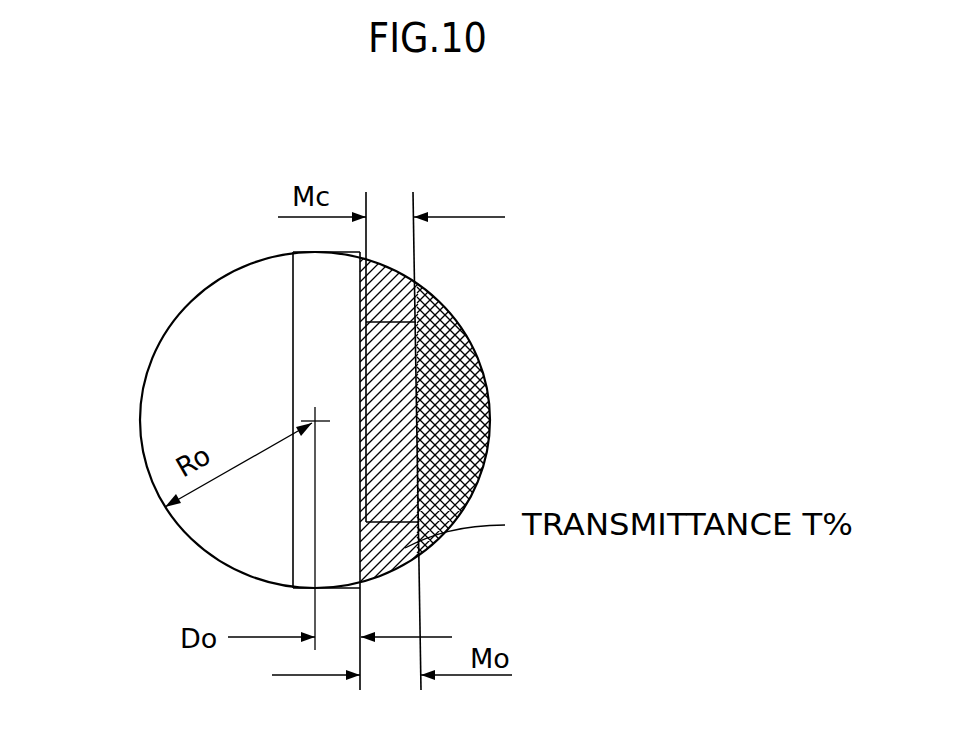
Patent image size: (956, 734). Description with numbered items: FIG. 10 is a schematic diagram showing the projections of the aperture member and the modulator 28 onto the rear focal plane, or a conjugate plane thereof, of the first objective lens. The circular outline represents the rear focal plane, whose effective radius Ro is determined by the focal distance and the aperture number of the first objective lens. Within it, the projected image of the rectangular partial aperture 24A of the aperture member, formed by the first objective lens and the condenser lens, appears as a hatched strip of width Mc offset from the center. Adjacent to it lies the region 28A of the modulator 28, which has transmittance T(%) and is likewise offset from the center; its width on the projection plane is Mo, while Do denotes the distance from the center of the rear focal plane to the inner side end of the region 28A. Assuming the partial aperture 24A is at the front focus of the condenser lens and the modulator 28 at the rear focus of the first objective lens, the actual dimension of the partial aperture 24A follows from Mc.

The modulator 28 is at (187, 537).
The region 28A is at (388, 258).
The partial aperture 24A is at (375, 356).